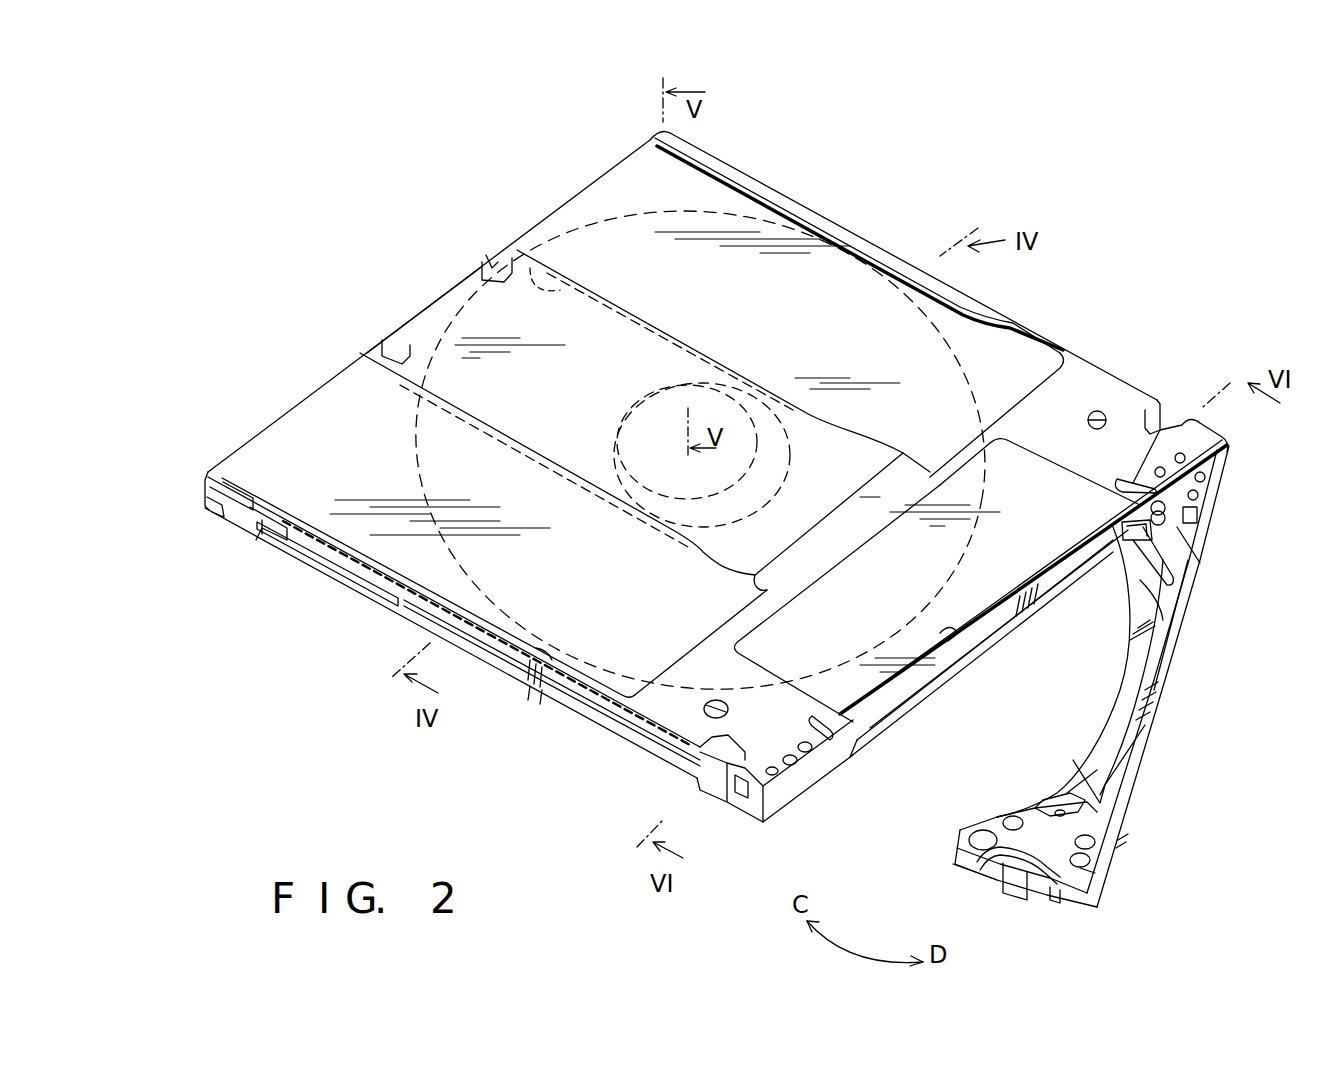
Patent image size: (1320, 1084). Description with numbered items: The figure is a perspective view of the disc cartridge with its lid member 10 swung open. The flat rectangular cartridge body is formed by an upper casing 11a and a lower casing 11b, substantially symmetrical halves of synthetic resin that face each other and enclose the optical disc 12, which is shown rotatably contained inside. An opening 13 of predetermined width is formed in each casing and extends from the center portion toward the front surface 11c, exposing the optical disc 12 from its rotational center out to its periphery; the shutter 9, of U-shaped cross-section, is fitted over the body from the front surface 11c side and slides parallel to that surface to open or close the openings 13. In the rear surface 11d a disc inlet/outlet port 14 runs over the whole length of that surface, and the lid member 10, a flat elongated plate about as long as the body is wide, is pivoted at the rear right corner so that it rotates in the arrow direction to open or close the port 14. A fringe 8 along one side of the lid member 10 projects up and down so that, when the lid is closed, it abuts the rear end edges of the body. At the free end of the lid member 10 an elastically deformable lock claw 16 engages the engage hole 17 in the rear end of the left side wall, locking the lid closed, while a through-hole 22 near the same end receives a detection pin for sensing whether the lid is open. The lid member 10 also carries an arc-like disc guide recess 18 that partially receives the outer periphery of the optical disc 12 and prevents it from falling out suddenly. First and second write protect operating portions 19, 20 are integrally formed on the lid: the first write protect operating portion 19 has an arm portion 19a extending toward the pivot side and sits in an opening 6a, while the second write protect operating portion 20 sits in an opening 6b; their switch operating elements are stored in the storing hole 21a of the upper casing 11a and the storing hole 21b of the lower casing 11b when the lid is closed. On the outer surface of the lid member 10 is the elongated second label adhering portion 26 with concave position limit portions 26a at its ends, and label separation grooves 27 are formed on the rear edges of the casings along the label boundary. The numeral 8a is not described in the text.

The opening 6a is at (1177, 563).
The opening 6b is at (1093, 803).
The fringe 8 is at (1181, 600).
The pivot shaft lower end 8a is at (1087, 870).
The shutter 9 is at (418, 306).
The lid member 10 is at (1097, 895).
The upper casing 11a is at (405, 600).
The lower casing 11b is at (416, 626).
The front surface 11c is at (320, 392).
The rear surface 11d is at (1007, 643).
The optical disc 12 is at (735, 182).
The opening 13 is at (545, 290).
The disc inlet/outlet port 14 is at (893, 710).
The lock claw 16 is at (1057, 893).
The engage hole 17 is at (733, 806).
The disc guide recess 18 is at (1122, 686).
The first write protect operating portion 19 is at (1115, 565).
The arm portion 19a is at (1200, 538).
The second write protect operating portion 20 is at (1043, 803).
The storing hole 21a is at (1147, 478).
The storing hole 21b is at (827, 753).
The through-hole 22 is at (1008, 817).
The second label adhering portion 26 is at (1163, 683).
The concave position limit portion 26a is at (1205, 530).
The label separation groove 27 is at (947, 636).